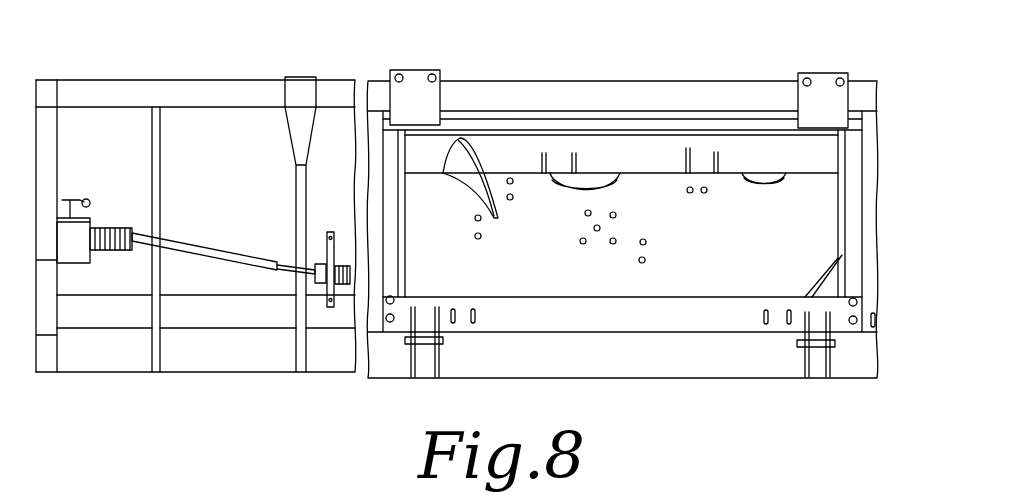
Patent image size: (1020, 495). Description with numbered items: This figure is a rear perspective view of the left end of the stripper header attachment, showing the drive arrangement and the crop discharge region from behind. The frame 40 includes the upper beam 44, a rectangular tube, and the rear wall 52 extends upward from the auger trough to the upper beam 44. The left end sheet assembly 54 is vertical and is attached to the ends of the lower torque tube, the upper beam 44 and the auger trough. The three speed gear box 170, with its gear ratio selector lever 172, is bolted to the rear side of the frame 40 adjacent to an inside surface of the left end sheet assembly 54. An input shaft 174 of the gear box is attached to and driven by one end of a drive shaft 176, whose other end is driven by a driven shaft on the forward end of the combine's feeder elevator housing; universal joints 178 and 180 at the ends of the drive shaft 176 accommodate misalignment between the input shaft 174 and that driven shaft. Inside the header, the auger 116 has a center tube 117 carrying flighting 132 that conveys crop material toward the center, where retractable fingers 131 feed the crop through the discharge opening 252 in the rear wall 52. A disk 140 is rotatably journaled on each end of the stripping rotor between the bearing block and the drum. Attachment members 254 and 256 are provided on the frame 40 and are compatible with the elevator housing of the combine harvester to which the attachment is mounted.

The frame 40 is at (103, 82).
The upper beam 44 is at (193, 80).
The rear wall 52 is at (233, 116).
The end sheet assembly 54 is at (34, 366).
The auger 116 is at (600, 275).
The center tube 117 is at (755, 278).
The retractable fingers 131 is at (580, 158).
The flighting 132 is at (463, 148).
The disk 140 is at (668, 358).
The three speed gear box 170 is at (70, 254).
The gear ratio selector lever 172 is at (88, 199).
The input shaft 174 is at (96, 222).
The drive shaft 176 is at (222, 252).
The universal joint 178 is at (118, 250).
The universal joint 180 is at (320, 284).
The discharge opening 252 is at (540, 296).
The attachment member 254 is at (412, 76).
The attachment member 256 is at (410, 356).